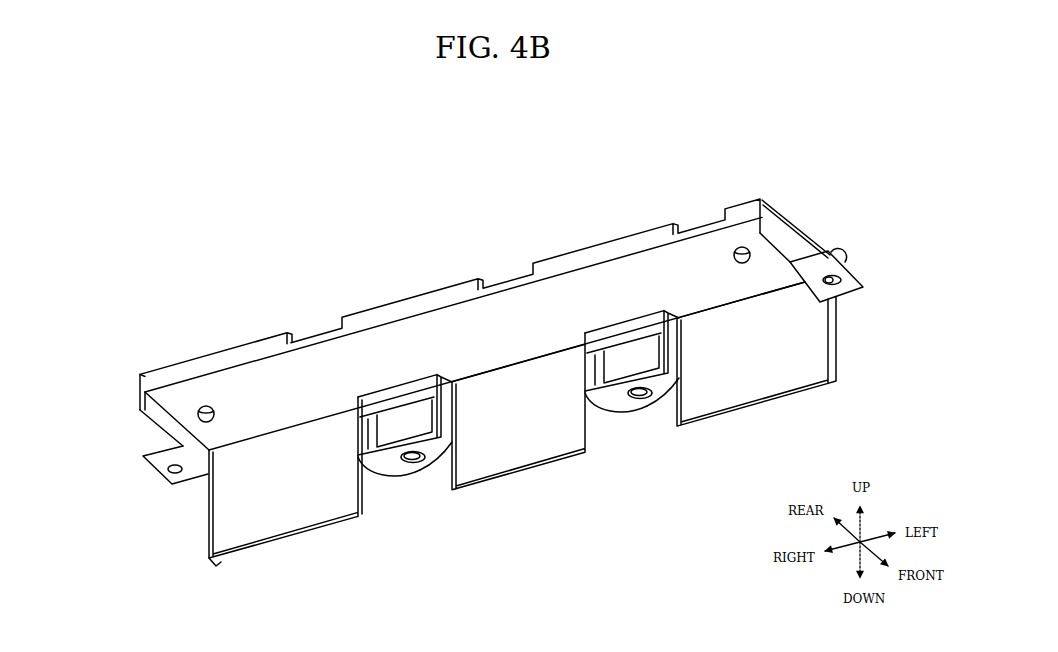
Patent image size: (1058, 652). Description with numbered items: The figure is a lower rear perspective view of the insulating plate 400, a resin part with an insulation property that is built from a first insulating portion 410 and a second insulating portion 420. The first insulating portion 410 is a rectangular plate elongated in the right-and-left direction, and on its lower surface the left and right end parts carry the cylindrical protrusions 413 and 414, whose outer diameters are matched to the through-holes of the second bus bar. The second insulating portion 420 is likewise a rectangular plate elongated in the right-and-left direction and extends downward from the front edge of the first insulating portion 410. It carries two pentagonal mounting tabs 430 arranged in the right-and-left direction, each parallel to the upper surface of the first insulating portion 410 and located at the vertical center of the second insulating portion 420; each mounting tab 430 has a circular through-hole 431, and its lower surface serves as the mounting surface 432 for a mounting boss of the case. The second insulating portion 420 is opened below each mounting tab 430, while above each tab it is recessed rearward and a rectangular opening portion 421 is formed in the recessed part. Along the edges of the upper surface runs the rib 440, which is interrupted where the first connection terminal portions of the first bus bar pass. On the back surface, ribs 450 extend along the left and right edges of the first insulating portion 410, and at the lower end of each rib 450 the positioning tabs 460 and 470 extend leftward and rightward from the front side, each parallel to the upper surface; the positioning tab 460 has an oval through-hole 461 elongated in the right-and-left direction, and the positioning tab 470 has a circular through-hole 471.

The insulating plate 400 is at (326, 274).
The first insulating portion 410 is at (272, 408).
The cylindrical protrusion 413 is at (743, 264).
The cylindrical protrusion 414 is at (212, 421).
The second insulating portion 420 is at (510, 477).
The rectangular opening portion 421 is at (400, 420).
The mounting tab 430 is at (425, 480).
The circular through-hole 431 is at (450, 463).
The mounting surface 432 is at (393, 463).
The rib 440 is at (604, 237).
The rib 450 is at (155, 428).
The positioning tab 460 is at (853, 268).
The oval through-hole 461 is at (838, 283).
The positioning tab 470 is at (188, 487).
The circular through-hole 471 is at (170, 480).